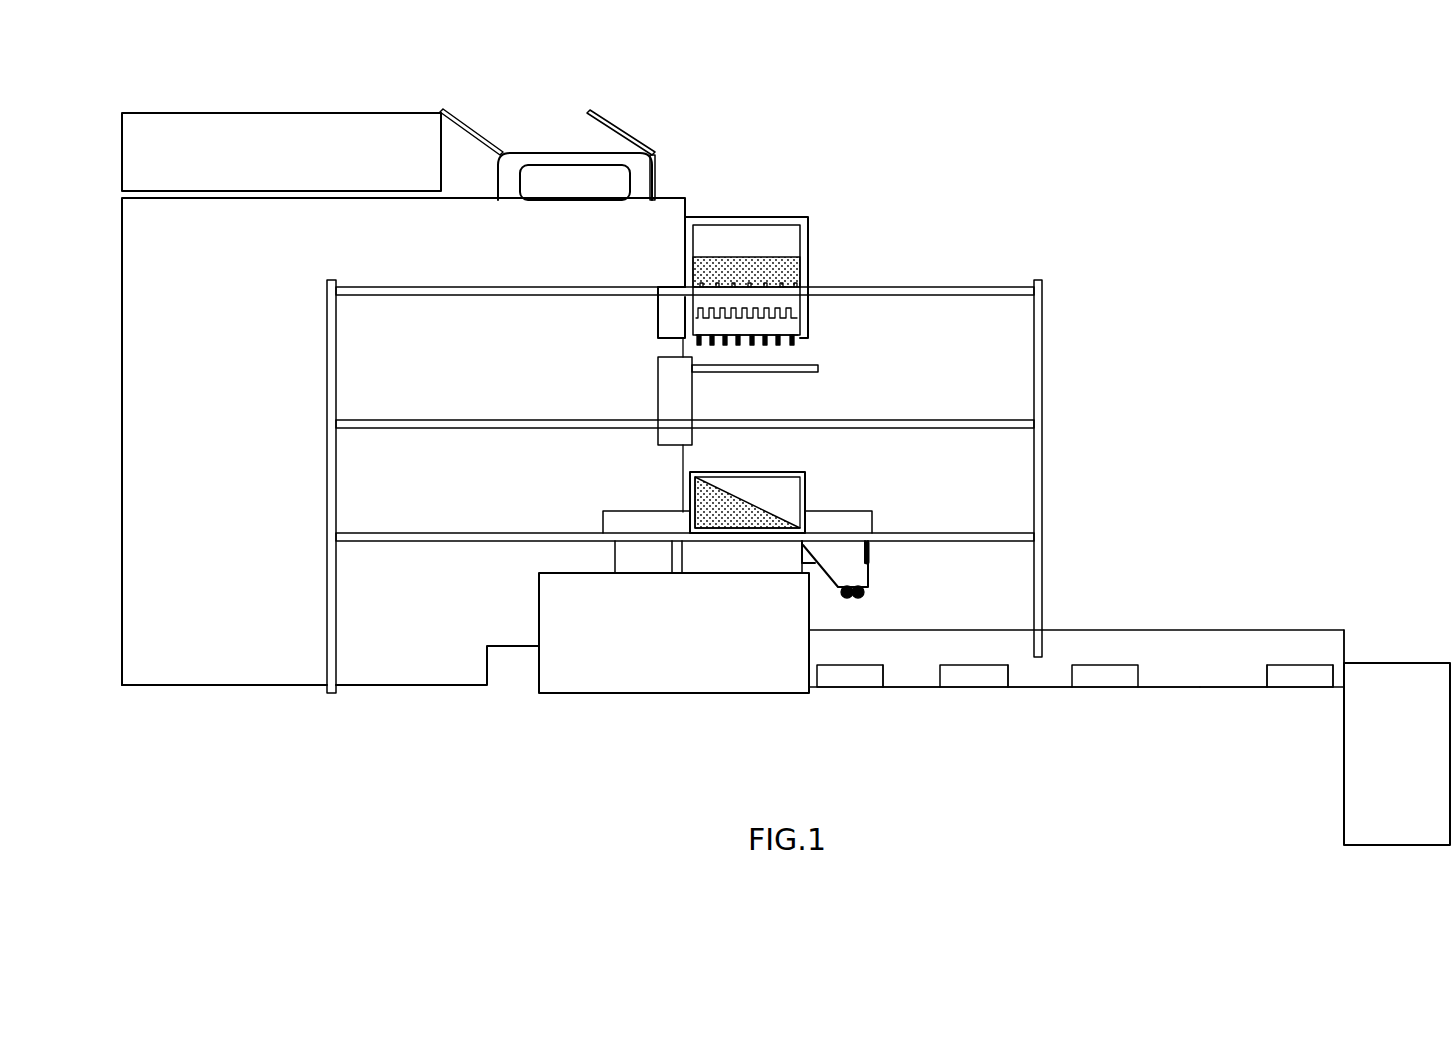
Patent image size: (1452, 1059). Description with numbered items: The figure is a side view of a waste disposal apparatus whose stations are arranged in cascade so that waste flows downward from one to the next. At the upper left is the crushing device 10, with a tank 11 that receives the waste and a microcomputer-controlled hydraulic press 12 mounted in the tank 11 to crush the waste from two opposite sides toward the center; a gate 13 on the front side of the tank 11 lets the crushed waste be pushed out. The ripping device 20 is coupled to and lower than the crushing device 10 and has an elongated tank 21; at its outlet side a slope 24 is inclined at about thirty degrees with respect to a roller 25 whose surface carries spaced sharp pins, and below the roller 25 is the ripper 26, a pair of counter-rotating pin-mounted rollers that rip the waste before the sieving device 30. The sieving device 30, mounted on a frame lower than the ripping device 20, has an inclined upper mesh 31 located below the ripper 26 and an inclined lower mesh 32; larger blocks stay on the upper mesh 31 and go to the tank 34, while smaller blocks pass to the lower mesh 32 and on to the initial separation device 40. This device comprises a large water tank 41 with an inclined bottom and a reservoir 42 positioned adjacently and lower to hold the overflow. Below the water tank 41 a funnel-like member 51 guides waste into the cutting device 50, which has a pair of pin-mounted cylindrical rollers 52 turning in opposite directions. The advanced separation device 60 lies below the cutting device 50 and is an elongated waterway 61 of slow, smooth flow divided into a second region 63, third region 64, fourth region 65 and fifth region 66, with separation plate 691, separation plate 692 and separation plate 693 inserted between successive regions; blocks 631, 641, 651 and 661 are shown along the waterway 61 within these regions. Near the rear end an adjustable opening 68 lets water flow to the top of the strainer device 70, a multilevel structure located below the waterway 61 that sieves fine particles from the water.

The crushing device 10 is at (542, 144).
The tank 11 is at (615, 152).
The microcomputer-controlled hydraulic press 12 is at (530, 186).
The gate 13 is at (657, 177).
The ripping device 20 is at (773, 253).
The tank 21 is at (808, 240).
The slope 24 is at (790, 275).
The roller 25 is at (718, 302).
The ripper 26 is at (752, 307).
The sieving device 30 is at (990, 394).
The upper mesh 31 is at (762, 370).
The lower mesh 32 is at (832, 422).
The tank 34 is at (590, 668).
The initial separation device 40 is at (721, 485).
The water tank 41 is at (804, 470).
The reservoir 42 is at (828, 522).
The cutting device 50 is at (945, 586).
The funnel-like member 51 is at (823, 568).
The cylindrical roller 52 is at (862, 594).
The advanced separation device 60 is at (1067, 645).
The waterway 61 is at (1212, 648).
The second region 63 is at (902, 650).
The third region 64 is at (1027, 650).
The fourth region 65 is at (1158, 650).
The fifth region 66 is at (1263, 647).
The adjustable opening 68 is at (1343, 648).
The strainer device 70 is at (1425, 650).
The first block 631 is at (838, 678).
The second block 641 is at (993, 678).
The third block 651 is at (1110, 678).
The fourth block 661 is at (1315, 678).
The separation plate 691 is at (885, 678).
The separation plate 692 is at (1008, 678).
The separation plate 693 is at (1267, 675).